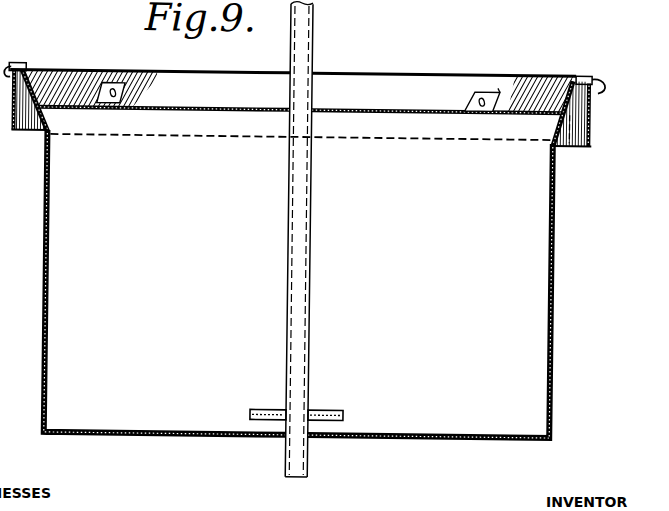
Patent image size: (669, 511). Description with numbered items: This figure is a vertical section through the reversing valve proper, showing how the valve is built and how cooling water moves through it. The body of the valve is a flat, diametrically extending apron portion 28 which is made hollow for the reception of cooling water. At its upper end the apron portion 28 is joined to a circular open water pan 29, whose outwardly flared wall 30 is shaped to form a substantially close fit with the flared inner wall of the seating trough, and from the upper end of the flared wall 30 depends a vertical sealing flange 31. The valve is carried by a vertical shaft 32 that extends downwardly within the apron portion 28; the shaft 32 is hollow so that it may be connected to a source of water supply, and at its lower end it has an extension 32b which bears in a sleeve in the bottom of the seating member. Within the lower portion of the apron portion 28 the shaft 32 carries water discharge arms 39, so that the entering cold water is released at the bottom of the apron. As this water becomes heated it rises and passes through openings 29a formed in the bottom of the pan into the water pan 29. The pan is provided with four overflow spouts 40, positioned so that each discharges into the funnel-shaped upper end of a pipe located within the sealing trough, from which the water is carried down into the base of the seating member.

The apron portion 28 is at (533, 323).
The water pan 29 is at (168, 80).
The openings 29a is at (95, 92).
The outwardly flared wall 30 is at (576, 97).
The vertical sealing flange 31 is at (591, 123).
The vertical shaft 32 is at (306, 52).
The extension 32b is at (294, 468).
The water discharge arms 39 is at (260, 423).
The overflow spouts 40 is at (22, 57).